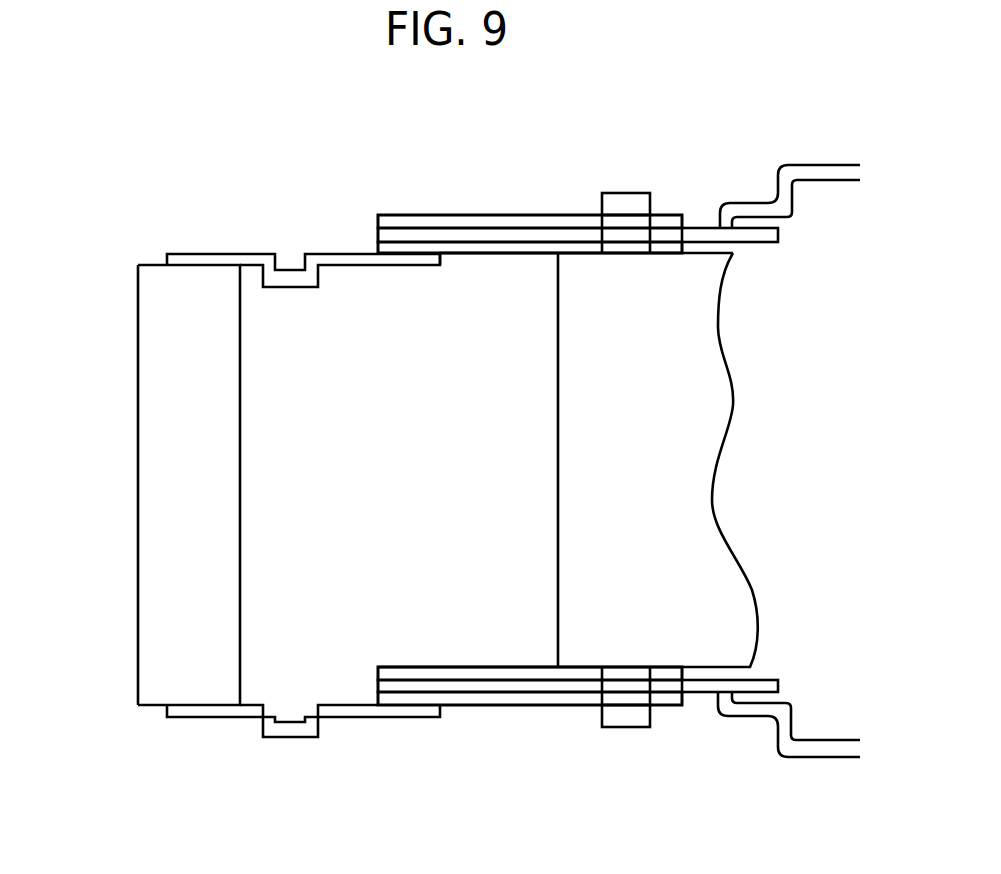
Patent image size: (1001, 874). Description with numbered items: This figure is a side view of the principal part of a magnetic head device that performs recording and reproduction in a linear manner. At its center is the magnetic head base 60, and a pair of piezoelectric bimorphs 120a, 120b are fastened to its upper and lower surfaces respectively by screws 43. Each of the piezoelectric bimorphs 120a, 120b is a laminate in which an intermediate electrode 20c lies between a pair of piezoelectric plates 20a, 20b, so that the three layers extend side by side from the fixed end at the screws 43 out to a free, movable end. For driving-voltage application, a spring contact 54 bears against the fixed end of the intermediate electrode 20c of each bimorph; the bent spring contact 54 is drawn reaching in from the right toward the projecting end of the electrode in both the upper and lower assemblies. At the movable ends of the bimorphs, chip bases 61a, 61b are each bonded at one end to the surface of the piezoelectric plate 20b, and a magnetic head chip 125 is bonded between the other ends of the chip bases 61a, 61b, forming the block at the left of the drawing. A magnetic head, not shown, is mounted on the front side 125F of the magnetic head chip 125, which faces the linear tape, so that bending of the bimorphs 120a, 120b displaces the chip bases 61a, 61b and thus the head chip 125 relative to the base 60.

The magnetic head base 60 is at (708, 405).
The magnetic head chip 125 is at (153, 493).
The front side of the magnetic head chip 125F is at (137, 447).
The chip base 61a is at (210, 254).
The chip base 61b is at (192, 717).
The piezoelectric bimorph 120a is at (371, 200).
The piezoelectric bimorph 120b is at (490, 717).
The piezoelectric plate 20a is at (378, 222).
The piezoelectric plate 20b is at (378, 246).
The intermediate electrode 20c is at (770, 235).
The screw 43 is at (613, 202).
The spring contact 54 is at (807, 176).